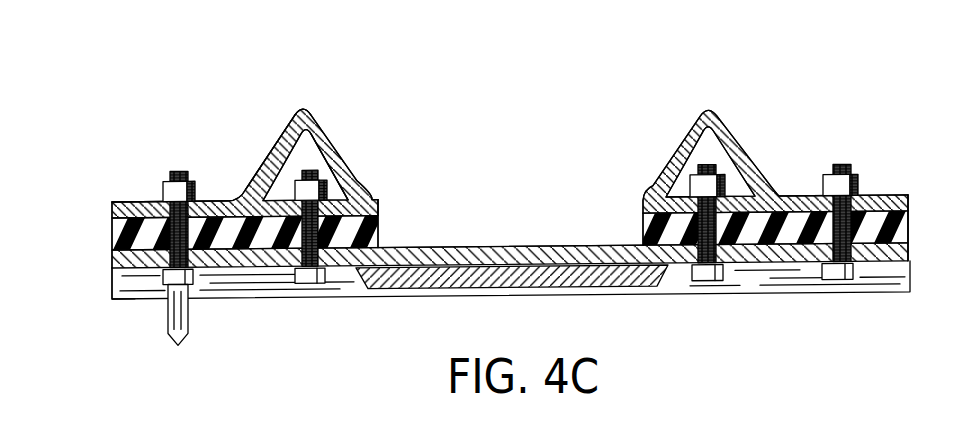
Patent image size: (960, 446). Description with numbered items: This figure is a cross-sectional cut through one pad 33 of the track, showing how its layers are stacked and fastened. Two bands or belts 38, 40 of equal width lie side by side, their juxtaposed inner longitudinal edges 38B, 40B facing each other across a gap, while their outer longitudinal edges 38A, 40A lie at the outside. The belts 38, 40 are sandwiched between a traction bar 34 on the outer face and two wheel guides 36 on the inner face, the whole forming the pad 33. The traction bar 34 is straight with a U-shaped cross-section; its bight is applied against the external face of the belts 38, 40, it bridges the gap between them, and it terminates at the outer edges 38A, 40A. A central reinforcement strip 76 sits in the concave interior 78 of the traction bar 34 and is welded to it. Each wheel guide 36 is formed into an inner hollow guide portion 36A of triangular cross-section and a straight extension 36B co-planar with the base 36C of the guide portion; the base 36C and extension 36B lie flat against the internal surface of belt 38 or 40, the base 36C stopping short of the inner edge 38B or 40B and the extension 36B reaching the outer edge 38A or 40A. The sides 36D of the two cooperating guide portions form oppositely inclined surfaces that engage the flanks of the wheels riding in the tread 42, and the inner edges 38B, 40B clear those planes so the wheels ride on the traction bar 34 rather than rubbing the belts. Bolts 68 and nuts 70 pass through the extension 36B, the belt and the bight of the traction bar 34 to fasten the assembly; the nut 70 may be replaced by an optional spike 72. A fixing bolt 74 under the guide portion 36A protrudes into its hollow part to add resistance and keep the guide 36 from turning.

The pad 33 is at (632, 243).
The traction bar 34 is at (888, 256).
The wheel guide 36 is at (308, 107).
The inner hollow guide portion 36A is at (283, 124).
The straight extension 36B is at (120, 202).
The base 36C is at (235, 195).
The sides 36D is at (333, 150).
The belt 38 is at (215, 230).
The outer longitudinal edge 38A is at (112, 240).
The inner longitudinal edge 38B is at (380, 232).
The belt 40 is at (865, 216).
The outer longitudinal edge 40A is at (910, 223).
The inner longitudinal edge 40B is at (641, 212).
The tread 42 is at (468, 248).
The bolt 68 is at (165, 238).
The nut 70 is at (160, 198).
The spike 72 is at (170, 316).
The fixing bolt 74 is at (373, 213).
The central reinforcement strip 76 is at (443, 281).
The concave interior 78 is at (125, 290).